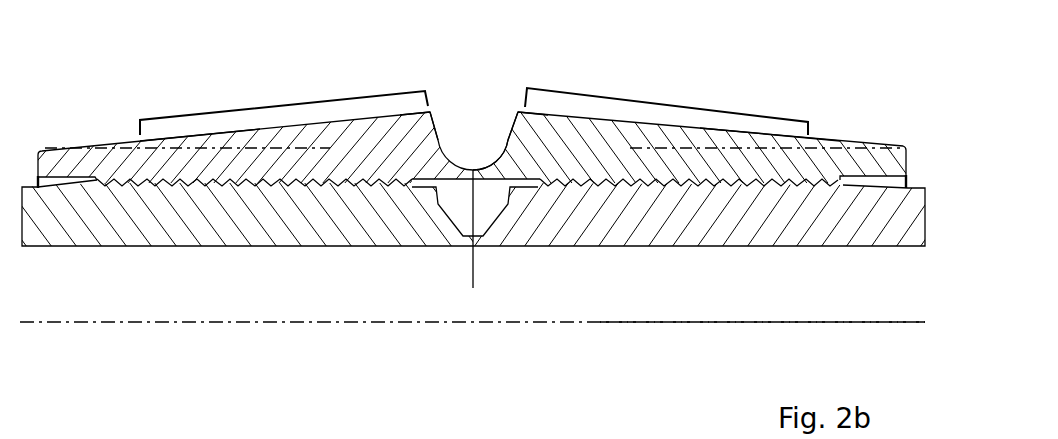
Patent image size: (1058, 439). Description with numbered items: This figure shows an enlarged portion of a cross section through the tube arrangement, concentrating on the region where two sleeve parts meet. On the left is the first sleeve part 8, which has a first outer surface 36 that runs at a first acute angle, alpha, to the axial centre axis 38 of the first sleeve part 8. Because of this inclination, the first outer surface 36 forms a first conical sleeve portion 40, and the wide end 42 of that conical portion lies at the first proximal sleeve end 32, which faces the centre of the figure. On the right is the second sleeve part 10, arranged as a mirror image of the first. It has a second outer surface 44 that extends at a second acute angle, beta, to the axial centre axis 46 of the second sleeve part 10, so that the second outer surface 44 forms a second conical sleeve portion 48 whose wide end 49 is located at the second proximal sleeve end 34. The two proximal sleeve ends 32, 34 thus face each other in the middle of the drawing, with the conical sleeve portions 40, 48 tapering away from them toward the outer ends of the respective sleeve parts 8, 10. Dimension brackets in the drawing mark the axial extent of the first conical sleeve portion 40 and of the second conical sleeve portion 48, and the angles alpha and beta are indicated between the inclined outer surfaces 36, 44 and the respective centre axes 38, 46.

The first sleeve part 8 is at (355, 158).
The second sleeve part 10 is at (592, 158).
The first proximal sleeve end 32 is at (459, 128).
The second proximal sleeve end 34 is at (500, 141).
The first outer surface 36 is at (189, 135).
The axial centre axis 38 is at (143, 322).
The first conical sleeve portion 40 is at (280, 106).
The wide end 42 is at (434, 106).
The second outer surface 44 is at (778, 138).
The axial centre axis 46 is at (710, 322).
The second conical sleeve portion 48 is at (668, 103).
The wide end 49 is at (516, 104).